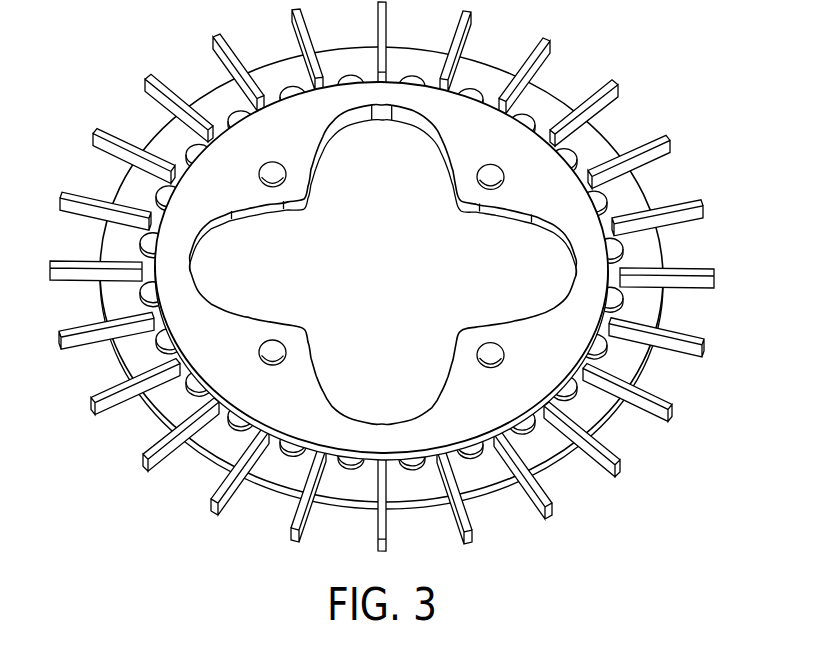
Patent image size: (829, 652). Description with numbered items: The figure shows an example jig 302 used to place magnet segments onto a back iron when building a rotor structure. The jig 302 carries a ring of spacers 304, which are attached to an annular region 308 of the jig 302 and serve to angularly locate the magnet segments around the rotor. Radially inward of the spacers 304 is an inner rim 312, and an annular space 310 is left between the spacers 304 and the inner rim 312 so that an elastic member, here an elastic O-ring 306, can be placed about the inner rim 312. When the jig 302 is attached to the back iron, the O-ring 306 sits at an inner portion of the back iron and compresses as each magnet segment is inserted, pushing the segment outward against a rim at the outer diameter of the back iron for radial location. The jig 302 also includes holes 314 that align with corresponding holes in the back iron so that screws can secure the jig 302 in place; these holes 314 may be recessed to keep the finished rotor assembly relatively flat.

The jig 302 is at (410, 277).
The spacers 304 is at (703, 349).
The elastic O-ring 306 is at (565, 395).
The annular region 308 is at (630, 363).
The annular space 310 is at (578, 365).
The inner rim 312 is at (592, 441).
The holes 314 is at (276, 346).